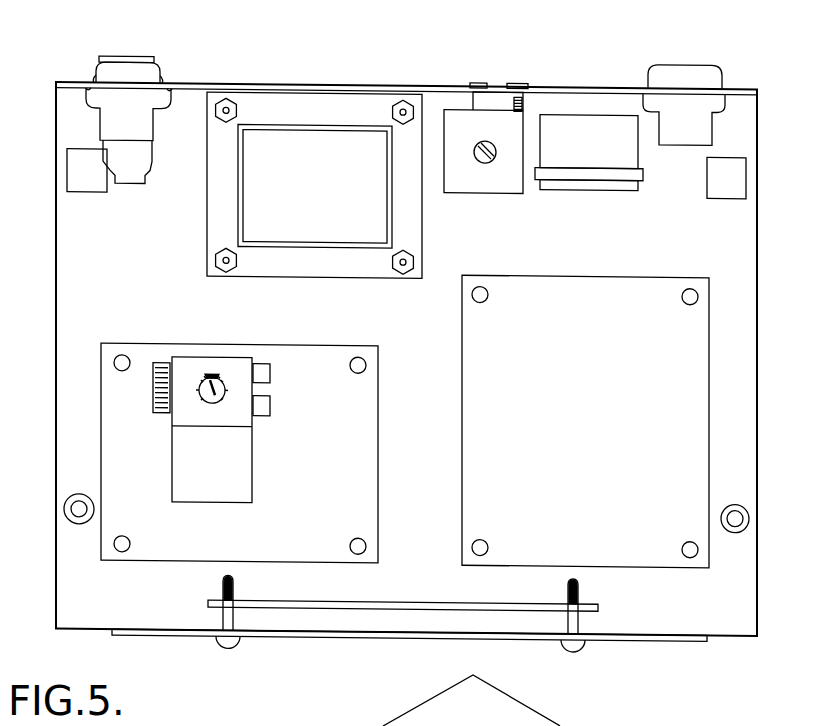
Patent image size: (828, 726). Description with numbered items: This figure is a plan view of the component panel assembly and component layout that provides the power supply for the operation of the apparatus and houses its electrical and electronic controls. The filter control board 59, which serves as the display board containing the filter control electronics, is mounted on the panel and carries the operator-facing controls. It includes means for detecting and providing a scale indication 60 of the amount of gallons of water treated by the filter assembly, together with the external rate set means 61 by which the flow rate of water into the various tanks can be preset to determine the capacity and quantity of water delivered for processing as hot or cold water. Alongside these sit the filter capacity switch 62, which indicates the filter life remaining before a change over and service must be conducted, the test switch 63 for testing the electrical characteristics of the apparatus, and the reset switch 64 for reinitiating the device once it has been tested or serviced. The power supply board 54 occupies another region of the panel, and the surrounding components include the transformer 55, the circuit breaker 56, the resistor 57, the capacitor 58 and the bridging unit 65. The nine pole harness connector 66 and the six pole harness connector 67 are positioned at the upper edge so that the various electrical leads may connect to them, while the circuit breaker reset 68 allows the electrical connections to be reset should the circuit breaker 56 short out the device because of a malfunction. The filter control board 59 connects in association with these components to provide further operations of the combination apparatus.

The power supply board 54 is at (601, 457).
The transformer 55 is at (320, 222).
The circuit breaker 56 is at (153, 126).
The resistor 57 is at (493, 102).
The capacitor 58 is at (621, 154).
The filter control board 59 is at (325, 359).
The scale indication 60 is at (224, 450).
The external rate set means 61 is at (236, 367).
The filter capacity switch 62 is at (153, 386).
The test switch 63 is at (258, 374).
The reset switch 64 is at (258, 407).
The bridging unit 65 is at (500, 178).
The nine pole harness connector 66 is at (695, 63).
The six pole harness connector 67 is at (152, 77).
The circuit breaker reset 68 is at (134, 38).